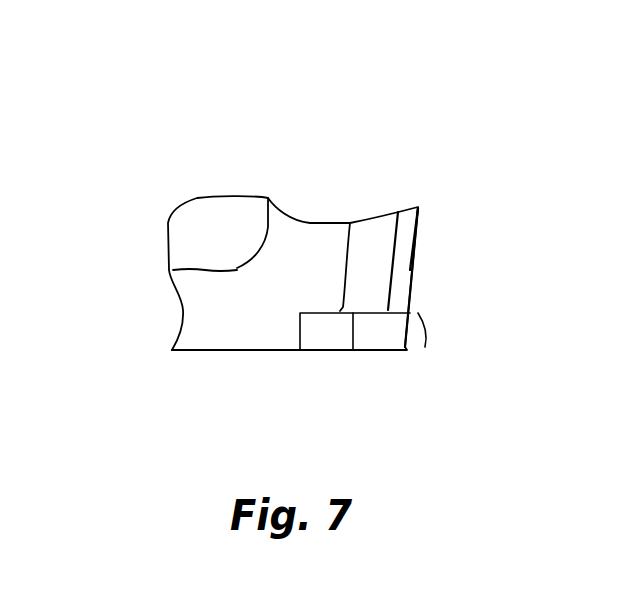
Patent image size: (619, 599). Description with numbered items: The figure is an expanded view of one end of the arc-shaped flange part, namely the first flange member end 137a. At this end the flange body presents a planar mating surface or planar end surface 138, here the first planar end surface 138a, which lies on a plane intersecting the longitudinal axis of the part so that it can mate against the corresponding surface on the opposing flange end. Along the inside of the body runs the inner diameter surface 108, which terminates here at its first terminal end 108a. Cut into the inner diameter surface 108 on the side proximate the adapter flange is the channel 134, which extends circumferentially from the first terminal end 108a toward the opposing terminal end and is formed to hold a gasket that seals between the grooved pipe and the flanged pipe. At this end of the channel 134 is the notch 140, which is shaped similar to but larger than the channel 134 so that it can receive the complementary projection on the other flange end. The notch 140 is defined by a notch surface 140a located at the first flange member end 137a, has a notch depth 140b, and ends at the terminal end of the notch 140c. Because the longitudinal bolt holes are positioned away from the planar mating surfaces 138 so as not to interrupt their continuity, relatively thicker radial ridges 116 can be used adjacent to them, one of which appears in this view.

The first flange member end 137a is at (136, 137).
The radial ridges 116 is at (210, 320).
The inner diameter surface 108 is at (372, 222).
The first terminal end 108a is at (433, 298).
The channel 134 is at (373, 268).
The notch 140 is at (397, 343).
The notch surface 140a is at (322, 337).
The notch depth 140b is at (432, 328).
The terminal end of the notch 140c is at (355, 350).
The planar mating surface 138 is at (178, 372).
The first planar end surface 138a is at (222, 350).